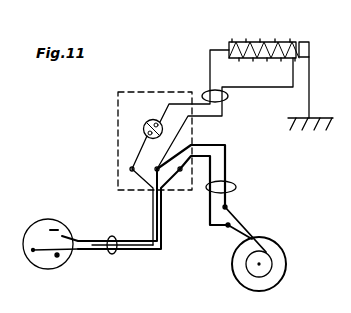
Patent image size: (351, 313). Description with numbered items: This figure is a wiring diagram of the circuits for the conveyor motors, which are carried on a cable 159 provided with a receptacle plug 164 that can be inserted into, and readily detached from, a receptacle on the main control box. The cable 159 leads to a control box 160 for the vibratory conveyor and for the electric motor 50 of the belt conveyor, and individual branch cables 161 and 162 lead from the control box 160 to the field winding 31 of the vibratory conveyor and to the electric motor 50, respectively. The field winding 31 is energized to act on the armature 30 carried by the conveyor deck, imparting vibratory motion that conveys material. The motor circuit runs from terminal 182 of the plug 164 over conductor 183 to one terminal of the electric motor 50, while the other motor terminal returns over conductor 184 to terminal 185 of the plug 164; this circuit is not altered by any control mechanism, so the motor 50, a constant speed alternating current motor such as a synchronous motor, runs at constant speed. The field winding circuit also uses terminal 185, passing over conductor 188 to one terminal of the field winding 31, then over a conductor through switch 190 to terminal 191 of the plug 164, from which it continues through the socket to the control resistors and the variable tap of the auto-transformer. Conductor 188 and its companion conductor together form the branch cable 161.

The armature 30 is at (304, 42).
The field winding 31 is at (254, 40).
The electric motor 50 is at (285, 258).
The cable 159 is at (113, 255).
The control box 160 is at (118, 126).
The branch cable 161 is at (223, 101).
The branch cable 162 is at (236, 186).
The receptacle plug 164 is at (42, 229).
The terminal 182 is at (33, 253).
The conductor 183 is at (165, 237).
The conductor 184 is at (226, 154).
The terminal 185 is at (57, 257).
The conductor 188 is at (258, 88).
The switch 190 is at (150, 122).
The terminal 191 is at (50, 230).